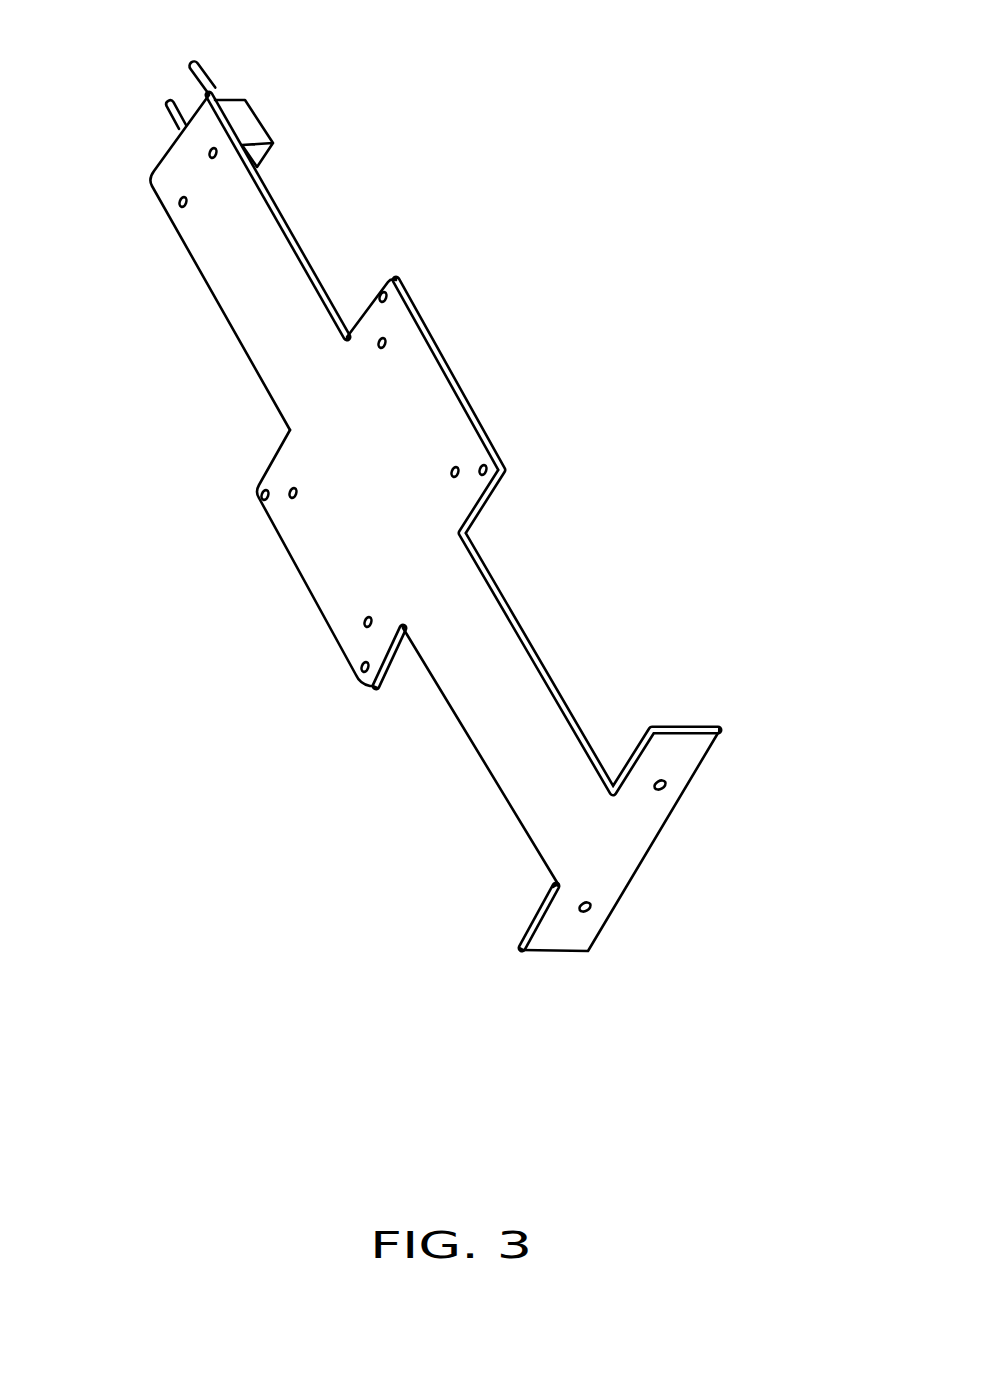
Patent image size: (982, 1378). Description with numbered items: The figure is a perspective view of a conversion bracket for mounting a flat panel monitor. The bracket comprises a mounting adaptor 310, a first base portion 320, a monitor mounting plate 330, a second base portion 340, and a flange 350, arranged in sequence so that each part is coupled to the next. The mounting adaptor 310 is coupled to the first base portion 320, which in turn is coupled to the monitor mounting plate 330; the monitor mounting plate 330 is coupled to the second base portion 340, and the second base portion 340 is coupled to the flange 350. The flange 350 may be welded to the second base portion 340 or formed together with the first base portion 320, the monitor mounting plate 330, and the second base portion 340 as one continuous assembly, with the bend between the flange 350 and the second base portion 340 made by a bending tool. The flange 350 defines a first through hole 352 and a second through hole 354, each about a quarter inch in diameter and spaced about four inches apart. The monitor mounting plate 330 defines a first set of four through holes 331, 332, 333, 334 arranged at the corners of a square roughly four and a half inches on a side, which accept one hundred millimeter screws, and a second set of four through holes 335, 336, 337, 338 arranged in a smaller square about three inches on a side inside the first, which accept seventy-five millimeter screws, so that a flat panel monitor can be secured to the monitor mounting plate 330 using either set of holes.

The mounting adaptor 310 is at (260, 120).
The first base portion 320 is at (225, 248).
The monitor mounting plate 330 is at (322, 562).
The through hole 331 is at (256, 493).
The through hole 332 is at (380, 285).
The through hole 333 is at (498, 493).
The through hole 334 is at (353, 673).
The through hole 335 is at (293, 503).
The through hole 336 is at (384, 337).
The through hole 337 is at (453, 465).
The through hole 338 is at (363, 622).
The second base portion 340 is at (500, 753).
The flange 350 is at (625, 850).
The first through hole 352 is at (590, 912).
The second through hole 354 is at (668, 788).